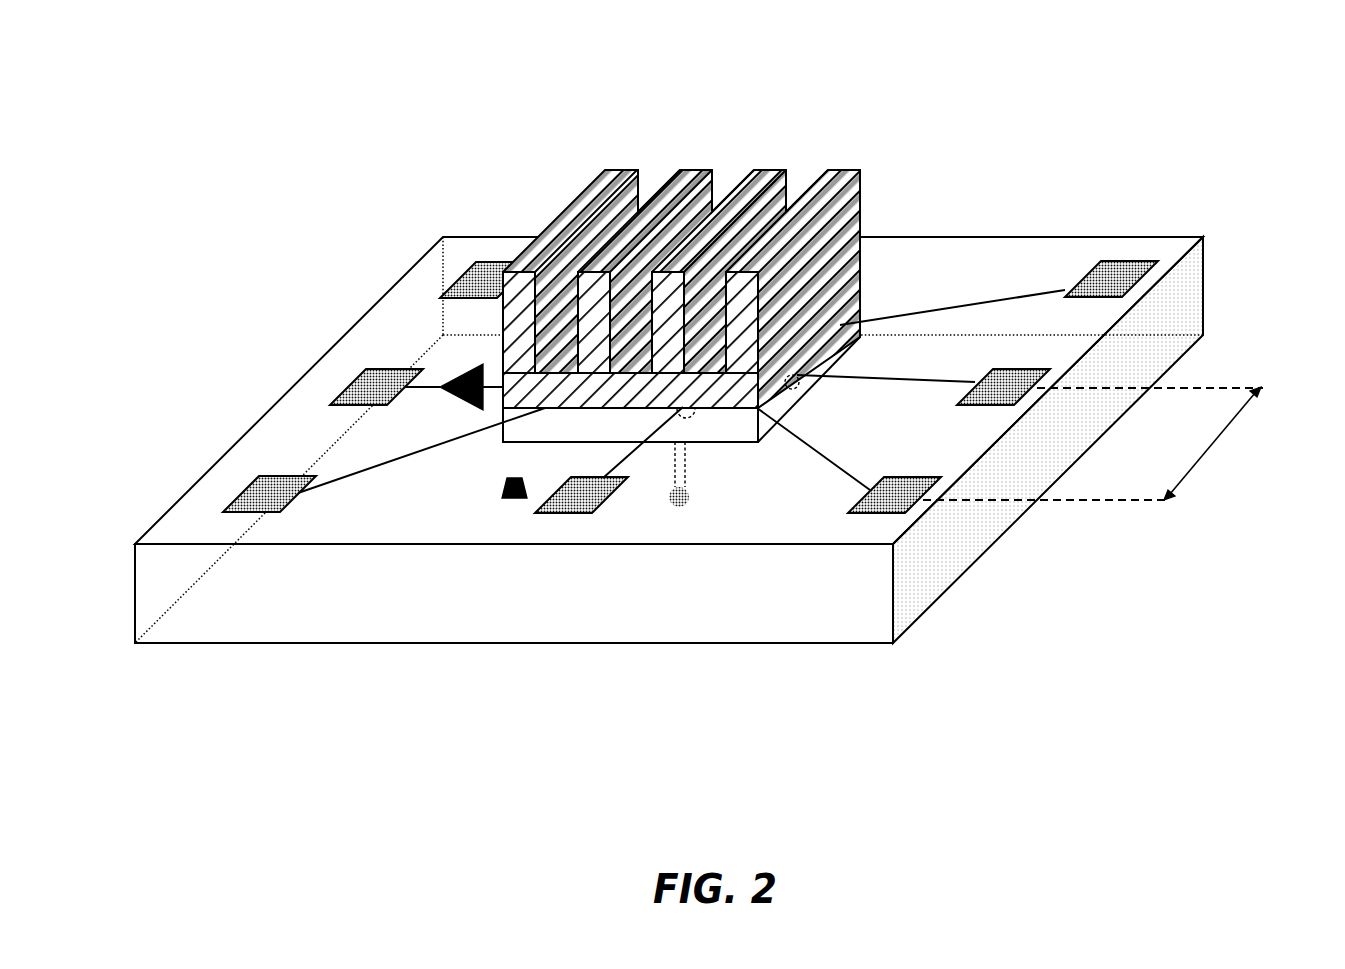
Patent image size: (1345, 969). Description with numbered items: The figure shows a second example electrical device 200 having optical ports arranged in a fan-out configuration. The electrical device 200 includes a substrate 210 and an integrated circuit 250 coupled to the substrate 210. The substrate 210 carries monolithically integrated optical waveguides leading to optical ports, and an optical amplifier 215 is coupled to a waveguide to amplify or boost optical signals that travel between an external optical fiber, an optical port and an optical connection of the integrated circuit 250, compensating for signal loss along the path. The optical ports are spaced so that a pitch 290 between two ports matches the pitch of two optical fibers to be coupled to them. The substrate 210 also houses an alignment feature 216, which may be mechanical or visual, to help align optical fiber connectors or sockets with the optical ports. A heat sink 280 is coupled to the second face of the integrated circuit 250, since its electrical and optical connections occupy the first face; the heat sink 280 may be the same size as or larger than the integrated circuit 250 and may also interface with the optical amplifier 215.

The electrical device 200 is at (278, 80).
The substrate 210 is at (1203, 294).
The optical amplifier 215 is at (470, 366).
The alignment feature 216 is at (505, 500).
The integrated circuit 250 is at (818, 358).
The heat sink 280 is at (860, 193).
The pitch 290 is at (1186, 472).